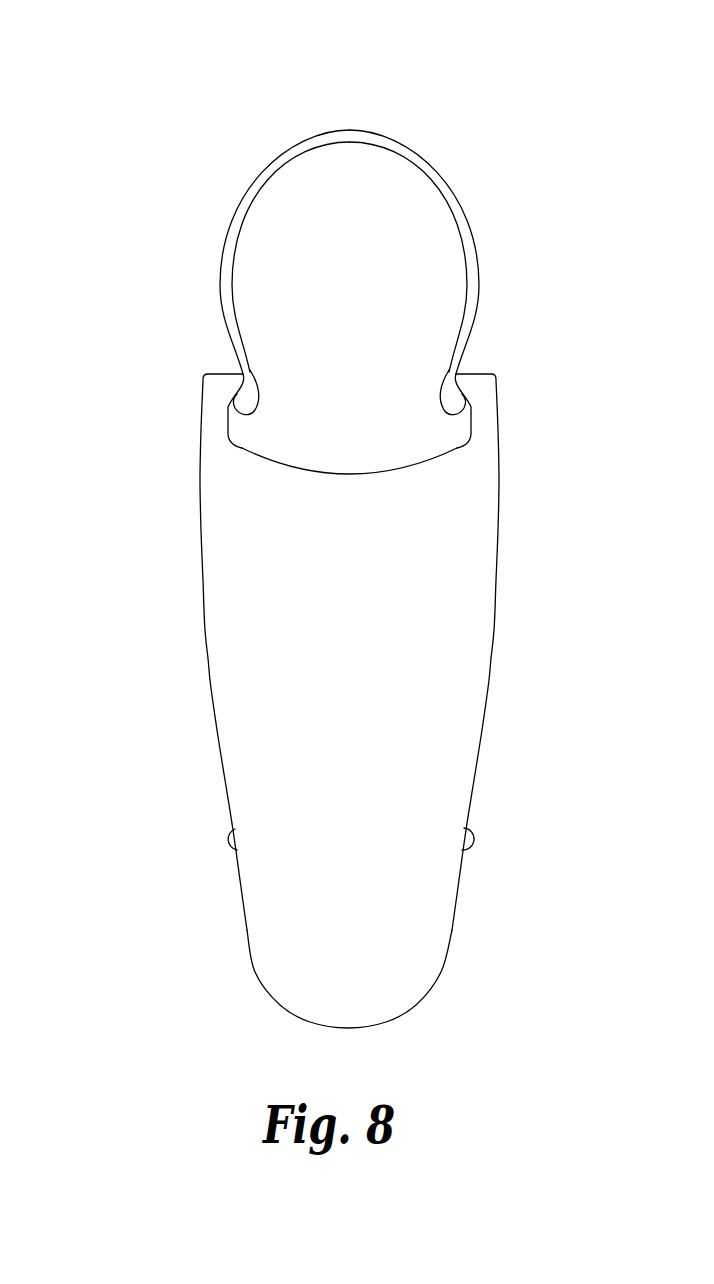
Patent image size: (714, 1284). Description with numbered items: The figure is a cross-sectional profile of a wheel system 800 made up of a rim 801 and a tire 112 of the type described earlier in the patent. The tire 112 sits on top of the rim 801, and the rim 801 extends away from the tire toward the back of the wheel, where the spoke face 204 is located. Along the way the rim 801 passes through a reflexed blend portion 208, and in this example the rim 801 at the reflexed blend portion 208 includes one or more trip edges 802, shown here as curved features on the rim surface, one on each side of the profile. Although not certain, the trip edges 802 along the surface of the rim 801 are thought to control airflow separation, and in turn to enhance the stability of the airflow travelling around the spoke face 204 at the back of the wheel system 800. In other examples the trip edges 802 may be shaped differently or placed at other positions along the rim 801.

The wheel system 800 is at (130, 90).
The tire 112 is at (448, 186).
The rim 801 is at (497, 440).
The reflexed blend portion 208 is at (490, 795).
The trip edges 802 is at (480, 846).
The spoke face 204 is at (452, 1024).